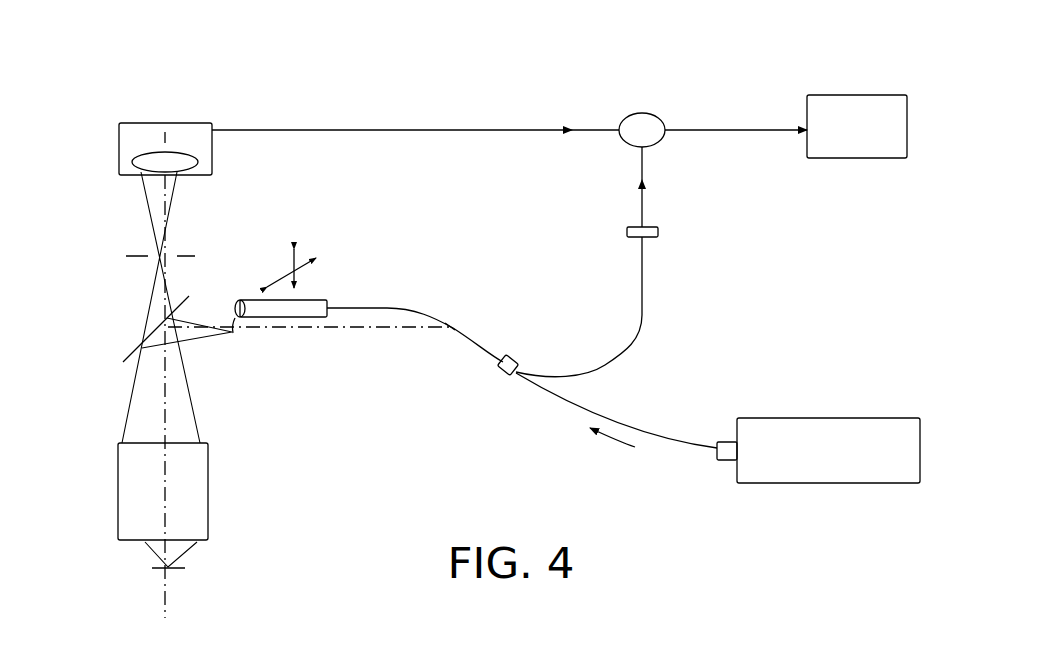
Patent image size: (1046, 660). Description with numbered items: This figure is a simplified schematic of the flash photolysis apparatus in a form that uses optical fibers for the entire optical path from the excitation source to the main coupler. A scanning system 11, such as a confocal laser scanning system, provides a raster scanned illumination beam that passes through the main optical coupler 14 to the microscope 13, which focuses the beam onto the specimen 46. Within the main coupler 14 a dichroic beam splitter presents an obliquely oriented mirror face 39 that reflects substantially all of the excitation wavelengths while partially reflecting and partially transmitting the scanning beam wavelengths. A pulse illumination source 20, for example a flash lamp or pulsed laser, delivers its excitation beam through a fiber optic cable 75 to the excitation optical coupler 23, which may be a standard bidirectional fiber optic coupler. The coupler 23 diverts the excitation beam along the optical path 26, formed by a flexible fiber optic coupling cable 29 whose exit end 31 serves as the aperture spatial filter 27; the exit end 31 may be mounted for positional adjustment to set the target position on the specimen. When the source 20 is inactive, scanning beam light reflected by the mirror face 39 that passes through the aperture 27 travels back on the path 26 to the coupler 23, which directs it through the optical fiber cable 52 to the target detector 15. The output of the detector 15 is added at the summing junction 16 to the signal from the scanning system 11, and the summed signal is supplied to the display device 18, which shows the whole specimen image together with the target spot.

The scanning system 11 is at (112, 137).
The microscope 13 is at (209, 490).
The main optical coupler 14 is at (125, 335).
The target detector 15 is at (650, 225).
The summing junction 16 is at (640, 113).
The display device 18 is at (833, 95).
The pulse illumination source 20 is at (803, 415).
The excitation optical coupler 23 is at (517, 357).
The optical path 26 is at (465, 315).
The aperture spatial filter 27 is at (237, 297).
The fiber optic coupling cable 29 is at (453, 328).
The exit end 31 is at (233, 334).
The mirror face 39 is at (189, 297).
The specimen 46 is at (178, 568).
The optical fiber cable 52 is at (642, 312).
The fiber optic cable 75 is at (605, 423).